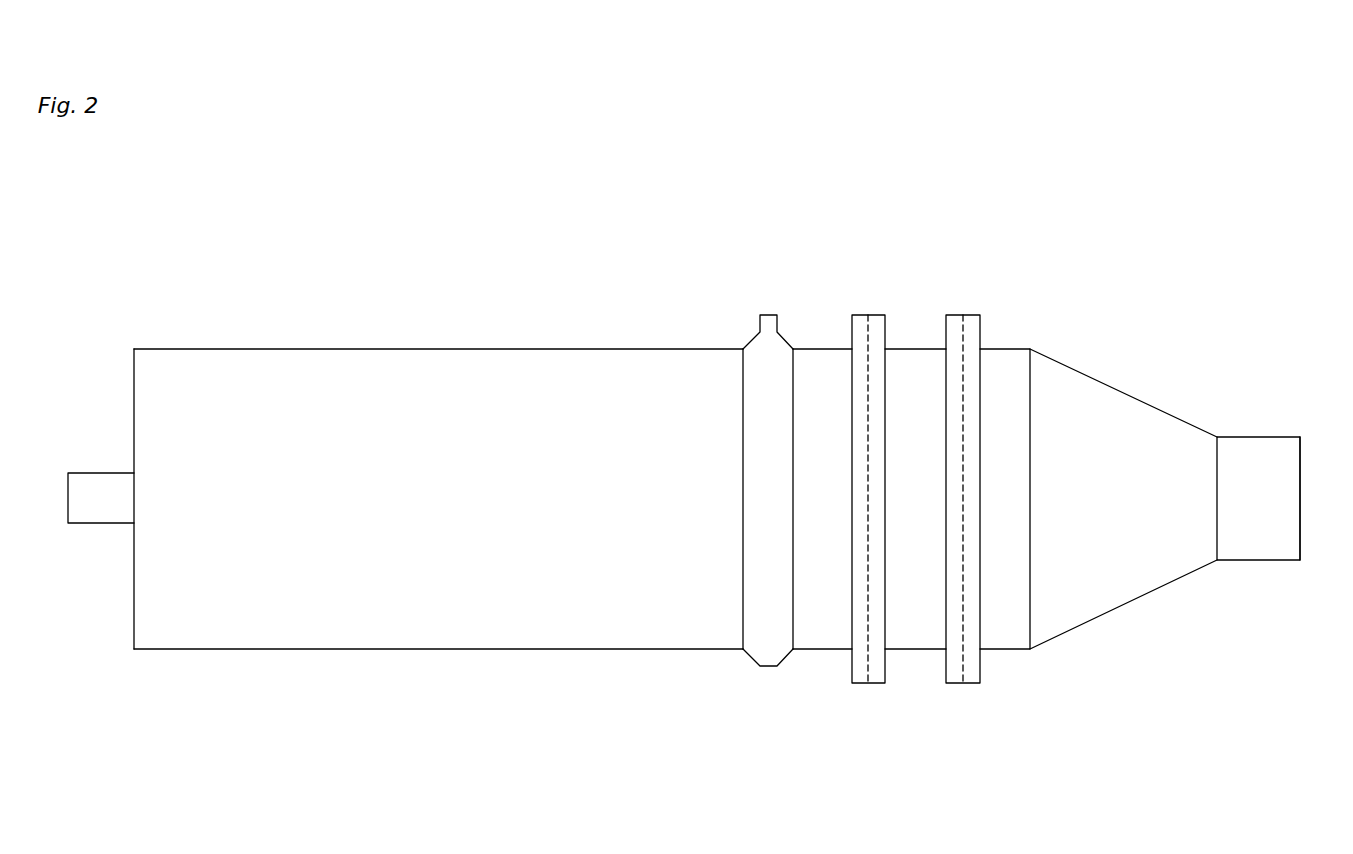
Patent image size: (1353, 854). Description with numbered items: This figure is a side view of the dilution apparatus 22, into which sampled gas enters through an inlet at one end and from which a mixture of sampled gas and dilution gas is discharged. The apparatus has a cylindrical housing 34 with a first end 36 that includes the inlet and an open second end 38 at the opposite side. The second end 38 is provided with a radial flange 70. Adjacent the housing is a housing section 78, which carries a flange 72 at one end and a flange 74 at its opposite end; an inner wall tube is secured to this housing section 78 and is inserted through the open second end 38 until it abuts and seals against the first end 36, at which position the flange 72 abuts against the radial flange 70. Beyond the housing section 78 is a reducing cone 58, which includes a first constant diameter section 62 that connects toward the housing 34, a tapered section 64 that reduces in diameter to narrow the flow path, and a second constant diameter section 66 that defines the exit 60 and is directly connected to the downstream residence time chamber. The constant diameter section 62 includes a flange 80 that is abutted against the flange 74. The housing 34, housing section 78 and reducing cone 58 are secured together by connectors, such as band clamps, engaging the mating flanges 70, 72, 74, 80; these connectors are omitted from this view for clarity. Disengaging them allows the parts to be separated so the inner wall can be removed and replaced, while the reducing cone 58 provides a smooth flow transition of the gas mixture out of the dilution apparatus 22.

The dilution apparatus 22 is at (435, 312).
The cylindrical housing 34 is at (540, 349).
The first end 36 is at (133, 378).
The second end 38 is at (820, 349).
The reducing cone 58 is at (1090, 395).
The exit 60 is at (1300, 540).
The first constant diameter section 62 is at (1005, 349).
The tapered section 64 is at (1062, 632).
The second constant diameter section 66 is at (1260, 435).
The radial flange 70 is at (850, 665).
The flange 72 is at (888, 663).
The flange 74 is at (945, 670).
The housing section 78 is at (918, 376).
The flange 80 is at (982, 665).